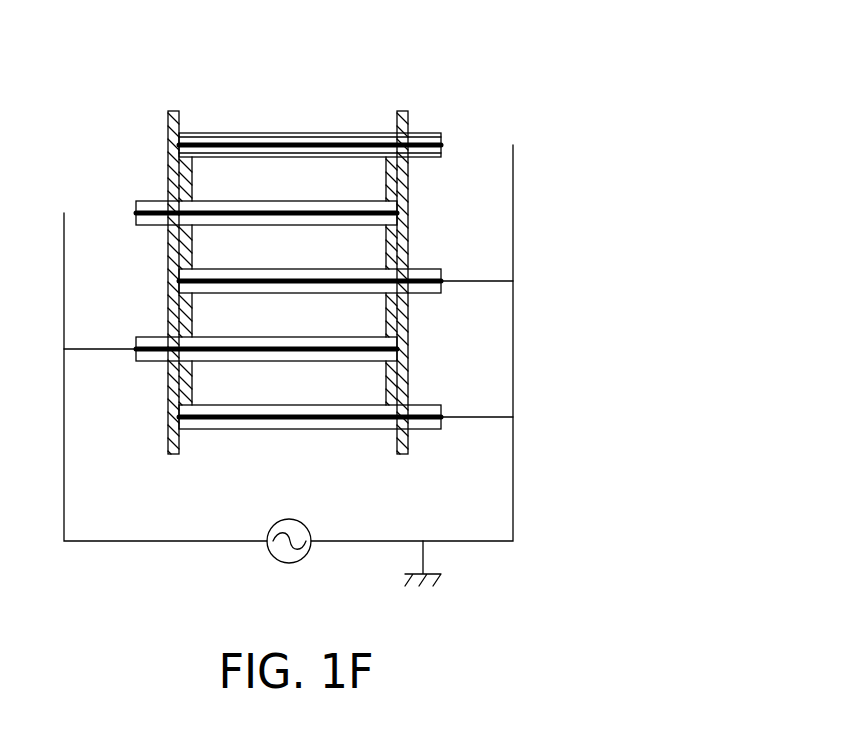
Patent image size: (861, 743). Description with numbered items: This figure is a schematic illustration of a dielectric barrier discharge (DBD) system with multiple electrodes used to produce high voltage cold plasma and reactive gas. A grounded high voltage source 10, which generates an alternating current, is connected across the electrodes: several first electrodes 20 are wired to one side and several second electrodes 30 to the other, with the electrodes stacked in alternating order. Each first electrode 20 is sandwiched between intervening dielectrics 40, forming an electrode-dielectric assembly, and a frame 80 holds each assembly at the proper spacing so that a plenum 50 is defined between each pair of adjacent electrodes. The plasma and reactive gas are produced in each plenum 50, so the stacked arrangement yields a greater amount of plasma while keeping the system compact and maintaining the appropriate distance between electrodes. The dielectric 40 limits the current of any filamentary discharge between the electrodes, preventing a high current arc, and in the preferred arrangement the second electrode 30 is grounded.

The high voltage source 10 is at (273, 564).
The first electrode 20 is at (427, 157).
The second electrode 30 is at (143, 221).
The intervening dielectric 40 is at (442, 153).
The plenum 50 is at (275, 192).
The frame 80 is at (166, 109).